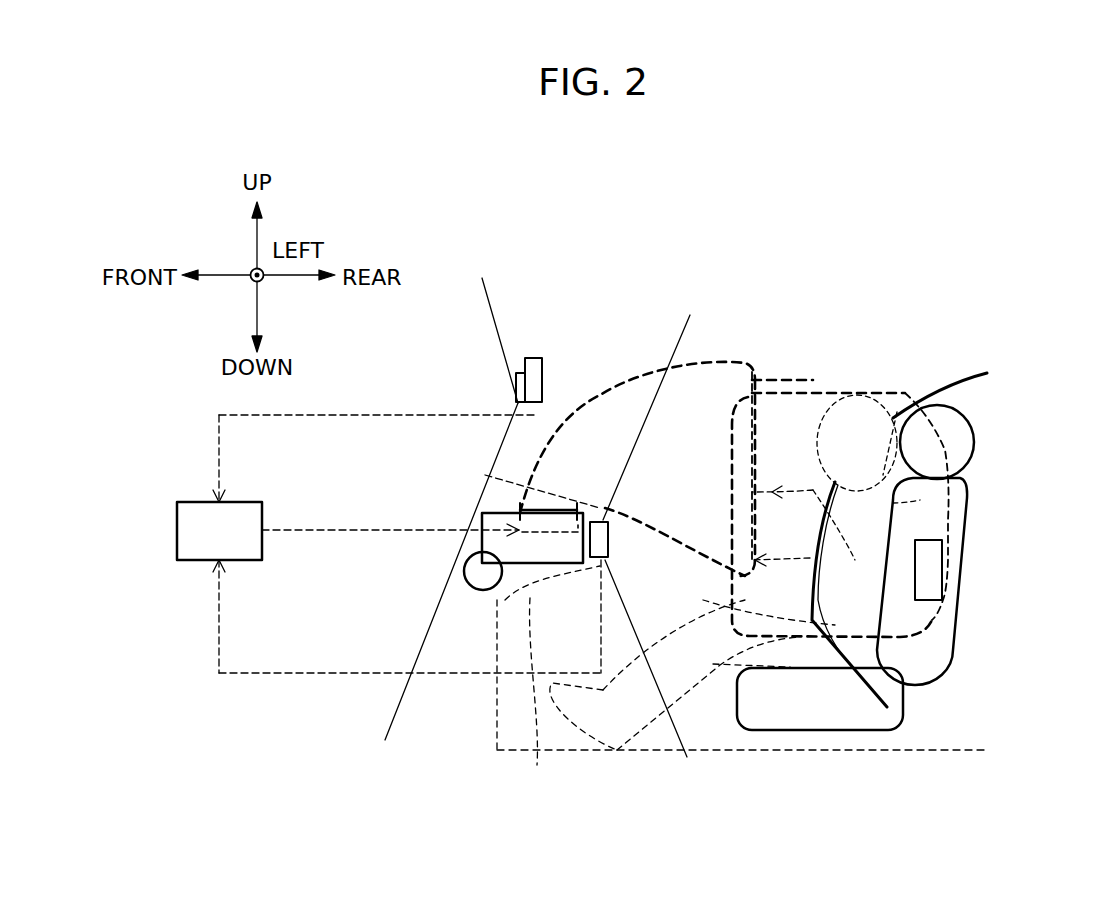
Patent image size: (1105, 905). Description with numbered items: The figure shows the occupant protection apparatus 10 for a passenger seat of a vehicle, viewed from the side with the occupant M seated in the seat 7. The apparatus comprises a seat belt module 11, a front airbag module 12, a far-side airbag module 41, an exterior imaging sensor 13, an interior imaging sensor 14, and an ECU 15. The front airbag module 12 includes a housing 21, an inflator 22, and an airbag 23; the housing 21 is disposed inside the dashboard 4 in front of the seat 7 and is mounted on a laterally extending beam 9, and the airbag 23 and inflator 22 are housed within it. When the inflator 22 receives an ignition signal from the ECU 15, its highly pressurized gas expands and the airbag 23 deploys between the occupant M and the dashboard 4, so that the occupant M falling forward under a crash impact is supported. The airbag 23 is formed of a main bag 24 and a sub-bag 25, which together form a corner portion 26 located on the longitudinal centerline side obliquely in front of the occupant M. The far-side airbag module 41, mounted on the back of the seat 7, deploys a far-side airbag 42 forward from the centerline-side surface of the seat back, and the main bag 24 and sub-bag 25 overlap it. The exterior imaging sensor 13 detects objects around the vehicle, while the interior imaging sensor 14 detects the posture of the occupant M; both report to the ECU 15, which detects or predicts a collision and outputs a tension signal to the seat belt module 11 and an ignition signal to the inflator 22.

The dashboard 4 is at (537, 693).
The seat 7 is at (948, 575).
The beam 9 is at (478, 592).
The occupant protection apparatus 10 is at (481, 237).
The seat belt module 11 is at (968, 373).
The front airbag module 12 is at (765, 190).
The exterior imaging sensor 13 is at (516, 393).
The interior imaging sensor 14 is at (608, 540).
The engine control unit (ECU) 15 is at (190, 561).
The housing 21 is at (520, 503).
The inflator 22 is at (565, 513).
The airbag 23 is at (787, 238).
The main bag 24 is at (720, 390).
The sub-bag 25 is at (787, 385).
The corner portion 26 is at (935, 612).
The far-side airbag module 41 is at (930, 565).
The far-side airbag 42 is at (920, 500).
The occupant M is at (846, 380).